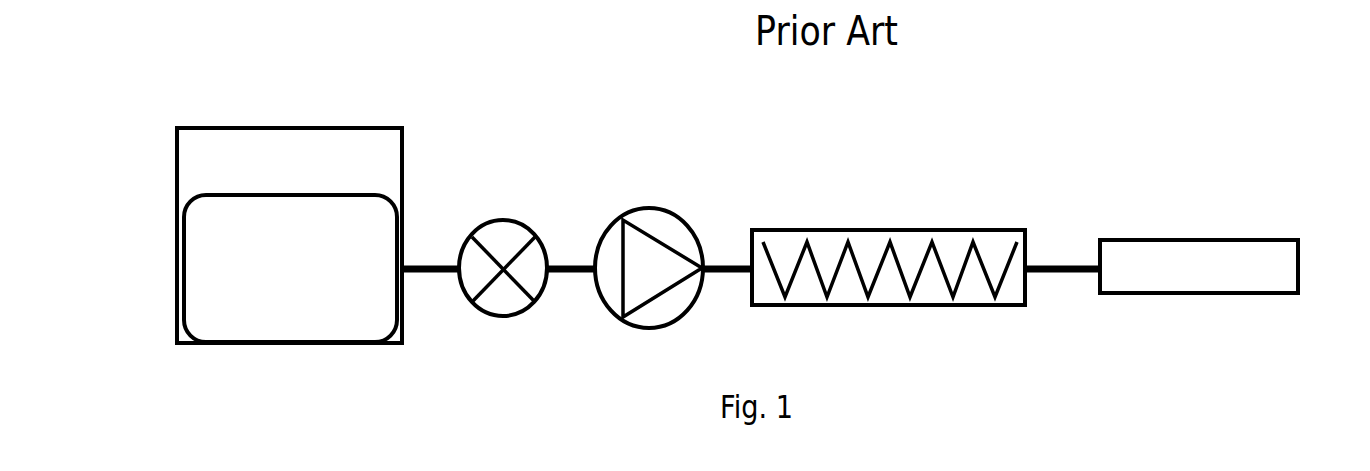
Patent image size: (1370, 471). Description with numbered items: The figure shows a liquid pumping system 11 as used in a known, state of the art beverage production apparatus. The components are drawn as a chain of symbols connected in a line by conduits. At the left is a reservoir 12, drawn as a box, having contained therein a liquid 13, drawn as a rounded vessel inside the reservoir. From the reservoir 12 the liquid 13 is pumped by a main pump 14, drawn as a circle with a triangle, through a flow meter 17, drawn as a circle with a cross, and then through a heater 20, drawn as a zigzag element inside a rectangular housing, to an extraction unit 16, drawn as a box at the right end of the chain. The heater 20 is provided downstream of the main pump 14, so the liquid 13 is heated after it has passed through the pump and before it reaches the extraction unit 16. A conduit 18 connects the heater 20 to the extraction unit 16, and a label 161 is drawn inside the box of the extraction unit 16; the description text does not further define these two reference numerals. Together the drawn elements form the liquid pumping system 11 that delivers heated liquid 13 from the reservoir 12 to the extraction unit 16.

The liquid pumping system 11 is at (889, 188).
The reservoir 12 is at (376, 128).
The liquid 13 is at (220, 322).
The main pump 14 is at (673, 240).
The extraction unit 16 is at (1222, 240).
The battery cell / module 161 is at (1198, 269).
The flow meter 17 is at (505, 240).
The conduit / line 18 is at (1050, 272).
The heater 20 is at (947, 242).